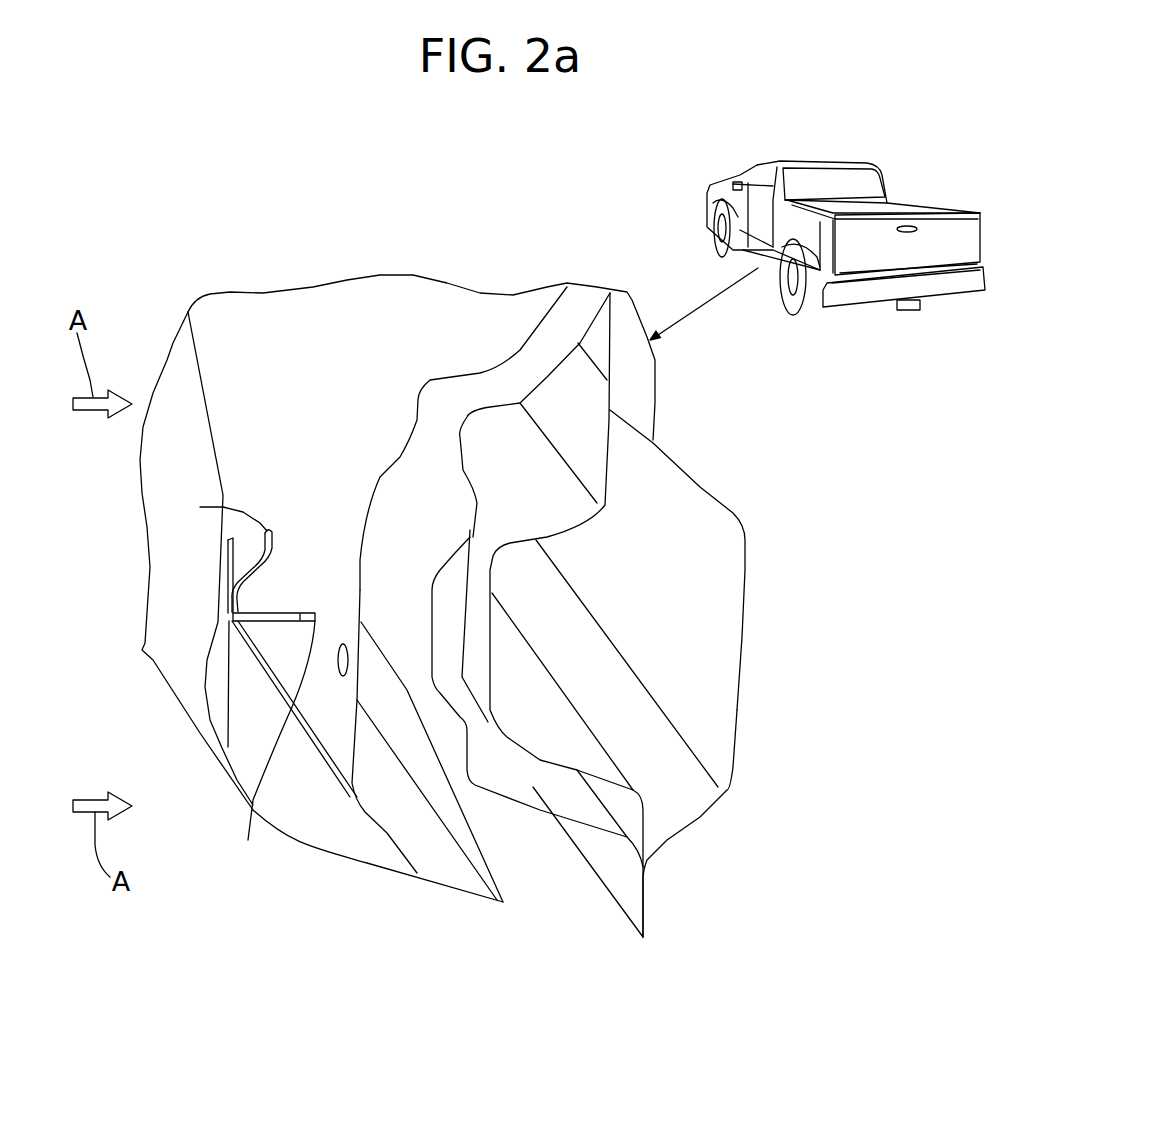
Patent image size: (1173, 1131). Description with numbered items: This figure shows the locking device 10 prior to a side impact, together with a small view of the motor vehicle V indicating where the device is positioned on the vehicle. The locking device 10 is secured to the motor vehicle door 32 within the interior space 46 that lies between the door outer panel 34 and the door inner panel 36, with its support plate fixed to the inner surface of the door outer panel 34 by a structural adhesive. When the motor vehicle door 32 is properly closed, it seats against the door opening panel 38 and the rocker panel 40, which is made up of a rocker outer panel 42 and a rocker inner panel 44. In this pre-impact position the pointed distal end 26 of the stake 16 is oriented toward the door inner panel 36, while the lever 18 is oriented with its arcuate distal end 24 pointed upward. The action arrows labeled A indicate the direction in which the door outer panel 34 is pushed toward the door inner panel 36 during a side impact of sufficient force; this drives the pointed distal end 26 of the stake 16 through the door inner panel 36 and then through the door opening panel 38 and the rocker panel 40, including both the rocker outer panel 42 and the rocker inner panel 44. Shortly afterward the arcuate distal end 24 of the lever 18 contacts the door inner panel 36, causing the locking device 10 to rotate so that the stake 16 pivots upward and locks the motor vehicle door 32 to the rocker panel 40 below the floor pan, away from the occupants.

The locking device 10 is at (293, 527).
The stake 16 is at (267, 622).
The lever 18 is at (228, 557).
The arcuate distal end 24 is at (200, 507).
The pointed distal end 26 is at (248, 840).
The motor vehicle door 32 is at (196, 928).
The door outer panel 34 is at (183, 627).
The door inner panel 36 is at (343, 700).
The door opening panel 38 is at (540, 810).
The rocker panel 40 is at (775, 500).
The rocker outer panel 42 is at (480, 679).
The rocker inner panel 44 is at (740, 710).
The interior space 46 is at (264, 318).
The motor vehicle V is at (847, 160).